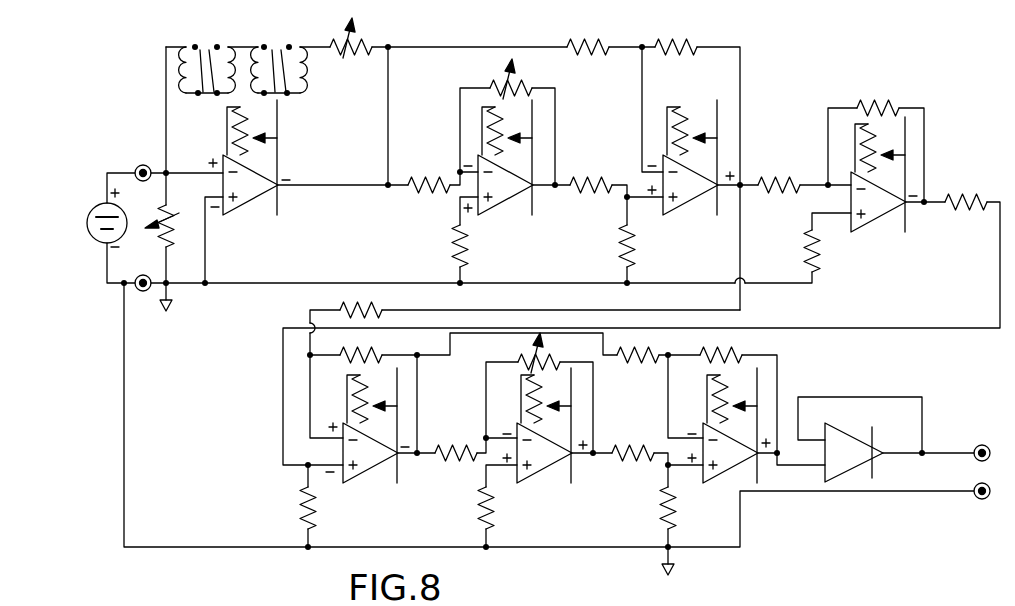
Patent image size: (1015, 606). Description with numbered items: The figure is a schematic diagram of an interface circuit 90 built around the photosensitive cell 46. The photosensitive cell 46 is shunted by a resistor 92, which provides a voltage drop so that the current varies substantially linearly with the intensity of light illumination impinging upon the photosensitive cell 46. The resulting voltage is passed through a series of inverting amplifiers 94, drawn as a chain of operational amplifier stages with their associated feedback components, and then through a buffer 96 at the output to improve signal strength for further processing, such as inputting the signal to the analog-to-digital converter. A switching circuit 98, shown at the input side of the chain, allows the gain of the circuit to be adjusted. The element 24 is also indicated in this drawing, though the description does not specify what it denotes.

The sensor input circuit 24 is at (147, 80).
The photosensitive cell 46 is at (92, 205).
The interface circuit 90 is at (944, 161).
The resistor 92 is at (193, 204).
The inverting amplifiers 94 is at (288, 212).
The buffer 96 is at (843, 385).
The switching circuit 98 is at (236, 45).